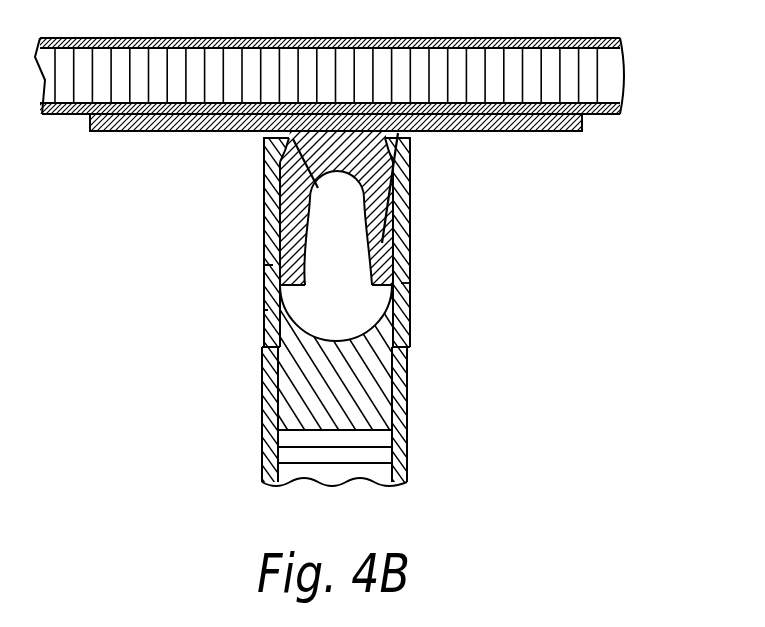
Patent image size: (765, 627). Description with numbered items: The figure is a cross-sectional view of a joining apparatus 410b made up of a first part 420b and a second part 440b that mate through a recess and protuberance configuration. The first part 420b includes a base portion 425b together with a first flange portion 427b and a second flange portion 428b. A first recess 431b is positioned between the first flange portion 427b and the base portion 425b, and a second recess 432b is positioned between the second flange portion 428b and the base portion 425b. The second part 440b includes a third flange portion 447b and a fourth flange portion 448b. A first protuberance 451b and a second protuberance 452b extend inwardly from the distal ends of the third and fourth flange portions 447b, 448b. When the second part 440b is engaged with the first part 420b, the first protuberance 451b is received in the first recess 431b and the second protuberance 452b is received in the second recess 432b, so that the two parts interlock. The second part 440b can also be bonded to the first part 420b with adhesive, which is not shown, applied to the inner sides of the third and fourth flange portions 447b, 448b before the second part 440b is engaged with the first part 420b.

The joining apparatus 410b is at (538, 280).
The first part 420b is at (495, 132).
The base portion 425b is at (185, 132).
The first flange portion 427b is at (410, 283).
The second flange portion 428b is at (265, 265).
The first recess 431b is at (410, 158).
The second recess 432b is at (265, 148).
The second part 440b is at (410, 332).
The third flange portion 447b is at (410, 255).
The fourth flange portion 448b is at (265, 201).
The first protuberance 451b is at (354, 198).
The second protuberance 452b is at (311, 212).